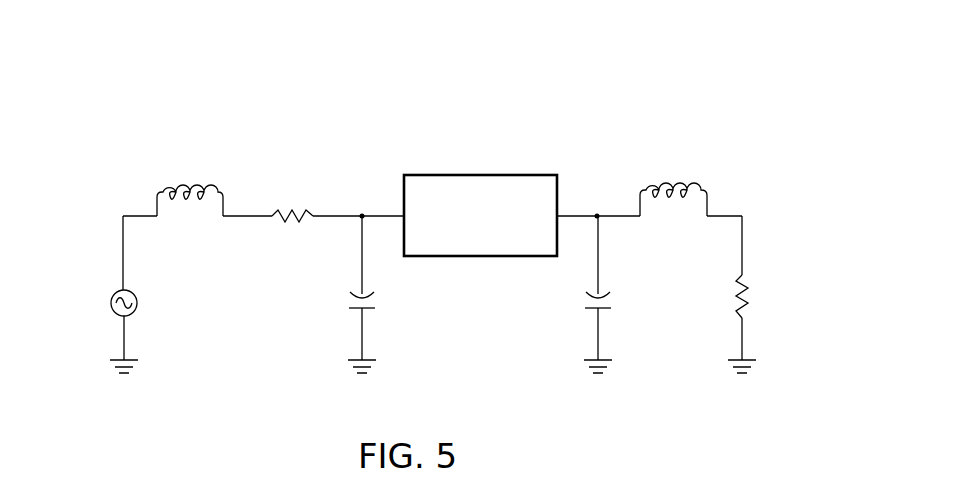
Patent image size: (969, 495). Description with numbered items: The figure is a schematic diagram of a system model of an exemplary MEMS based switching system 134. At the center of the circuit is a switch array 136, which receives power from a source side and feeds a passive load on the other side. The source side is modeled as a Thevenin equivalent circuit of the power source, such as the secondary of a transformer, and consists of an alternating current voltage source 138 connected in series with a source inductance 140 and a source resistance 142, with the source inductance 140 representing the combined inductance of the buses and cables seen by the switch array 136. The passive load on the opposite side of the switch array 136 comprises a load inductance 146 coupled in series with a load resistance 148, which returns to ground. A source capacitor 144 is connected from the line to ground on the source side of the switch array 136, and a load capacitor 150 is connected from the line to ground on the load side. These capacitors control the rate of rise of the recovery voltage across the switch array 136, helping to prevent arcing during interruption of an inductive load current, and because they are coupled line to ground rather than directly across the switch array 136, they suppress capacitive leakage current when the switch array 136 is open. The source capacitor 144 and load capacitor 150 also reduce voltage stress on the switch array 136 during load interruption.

The MEMS based switching system 134 is at (712, 67).
The switch array 136 is at (476, 175).
The AC voltage source 138 is at (135, 311).
The source inductance 140 is at (203, 192).
The source resistance 142 is at (297, 218).
The source capacitor 144 is at (367, 312).
The load inductance 146 is at (687, 190).
The load resistance 148 is at (748, 288).
The load capacitor 150 is at (604, 312).